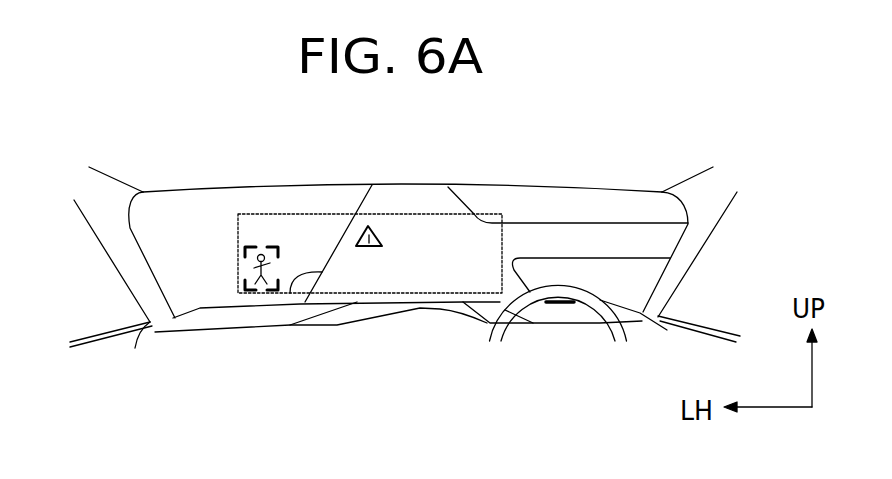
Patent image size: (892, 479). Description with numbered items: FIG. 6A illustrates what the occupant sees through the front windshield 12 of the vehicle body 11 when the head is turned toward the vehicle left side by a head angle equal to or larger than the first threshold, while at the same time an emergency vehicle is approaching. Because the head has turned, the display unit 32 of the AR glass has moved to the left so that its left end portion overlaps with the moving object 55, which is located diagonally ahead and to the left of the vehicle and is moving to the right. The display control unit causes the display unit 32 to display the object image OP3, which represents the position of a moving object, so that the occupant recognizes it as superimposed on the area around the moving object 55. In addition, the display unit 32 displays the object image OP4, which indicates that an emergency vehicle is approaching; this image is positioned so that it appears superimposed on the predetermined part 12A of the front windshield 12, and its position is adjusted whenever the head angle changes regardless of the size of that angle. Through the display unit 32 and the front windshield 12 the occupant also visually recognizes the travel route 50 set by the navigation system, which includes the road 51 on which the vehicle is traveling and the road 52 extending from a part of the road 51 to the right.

The vehicle body 11 is at (127, 255).
The front windshield 12 is at (167, 273).
The predetermined part of the front windshield 12A is at (367, 247).
The display unit 32 is at (317, 212).
The travel route 50 is at (290, 293).
The road 51 is at (425, 192).
The road 52 is at (568, 233).
The moving object 55 is at (248, 260).
The object image OP3 is at (270, 245).
The object image OP4 is at (382, 232).